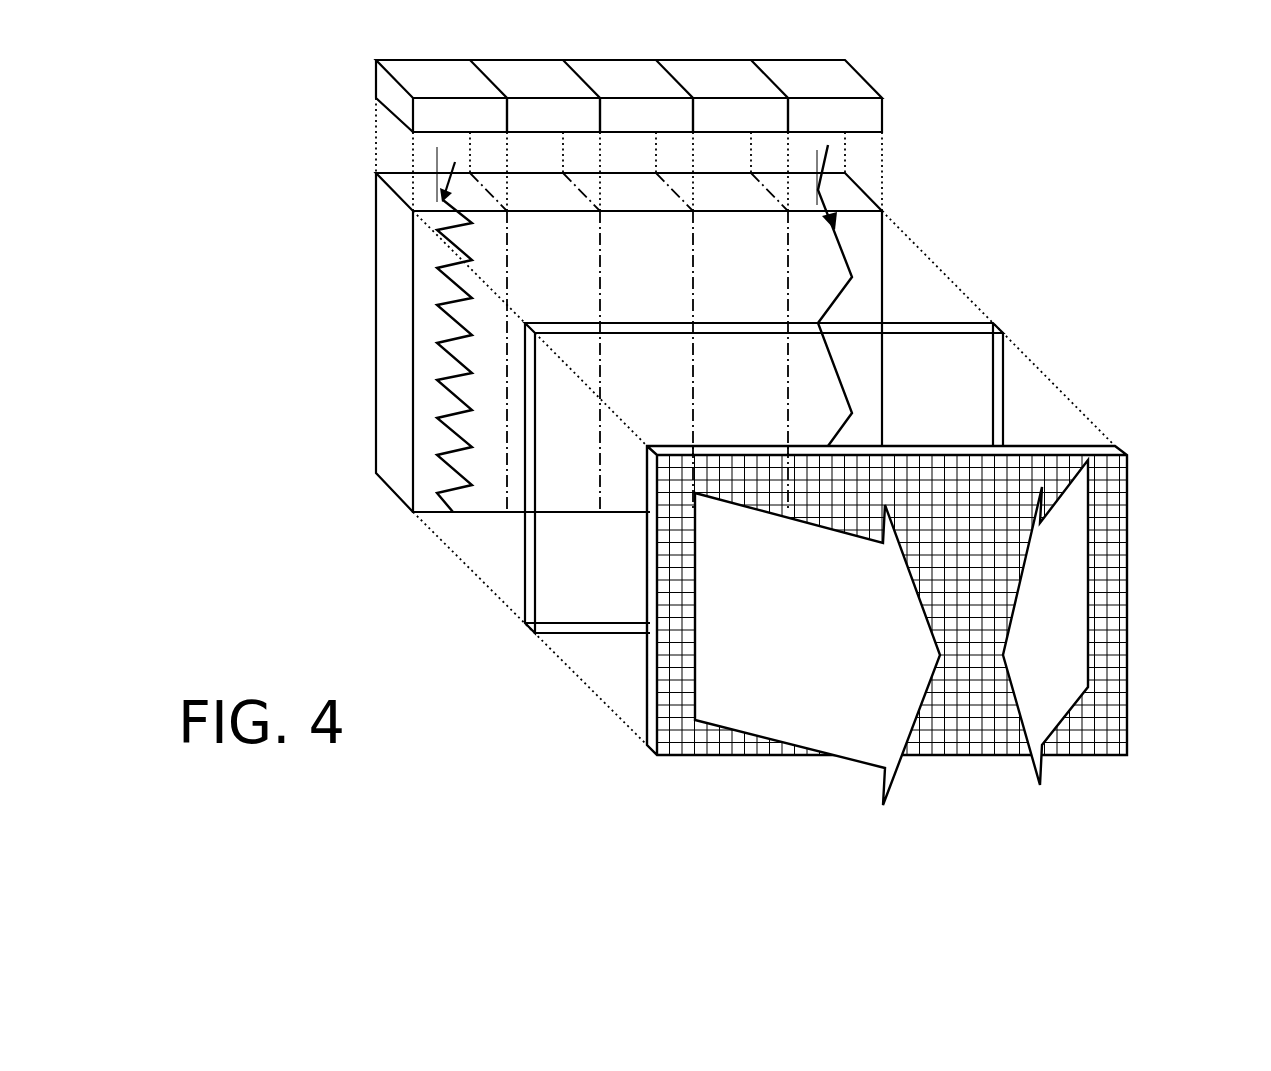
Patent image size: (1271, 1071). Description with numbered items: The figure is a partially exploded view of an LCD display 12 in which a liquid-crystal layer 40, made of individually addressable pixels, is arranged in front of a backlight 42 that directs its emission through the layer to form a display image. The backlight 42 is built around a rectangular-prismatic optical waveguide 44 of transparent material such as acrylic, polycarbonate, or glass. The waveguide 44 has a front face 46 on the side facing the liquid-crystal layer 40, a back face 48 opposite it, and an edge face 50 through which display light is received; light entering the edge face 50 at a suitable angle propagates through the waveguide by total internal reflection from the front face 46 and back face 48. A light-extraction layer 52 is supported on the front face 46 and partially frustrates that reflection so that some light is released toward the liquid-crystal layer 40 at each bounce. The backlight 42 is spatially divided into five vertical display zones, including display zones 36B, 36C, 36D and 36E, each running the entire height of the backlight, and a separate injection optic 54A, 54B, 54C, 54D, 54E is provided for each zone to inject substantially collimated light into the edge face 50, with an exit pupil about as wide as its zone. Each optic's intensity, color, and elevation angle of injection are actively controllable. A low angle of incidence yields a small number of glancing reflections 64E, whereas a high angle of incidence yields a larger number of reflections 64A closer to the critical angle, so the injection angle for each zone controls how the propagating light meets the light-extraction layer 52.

The LCD display 12 is at (1180, 202).
The vertical display zone 36B is at (589, 293).
The vertical display zone 36C is at (664, 293).
The vertical display zone 36D is at (761, 293).
The vertical display zone 36E is at (833, 293).
The liquid-crystal layer 40 is at (1127, 610).
The backlight 42 is at (282, 370).
The optical waveguide 44 is at (390, 311).
The front face 46 is at (420, 243).
The back face 48 is at (388, 218).
The edge face 50 is at (880, 188).
The light-extraction layer 52 is at (525, 577).
The injection optic 54A is at (458, 90).
The injection optic 54B is at (552, 90).
The injection optic 54C is at (645, 90).
The injection optic 54D is at (738, 90).
The injection optic 54E is at (833, 90).
The reflections 64A is at (450, 392).
The glancing reflections 64E is at (840, 248).